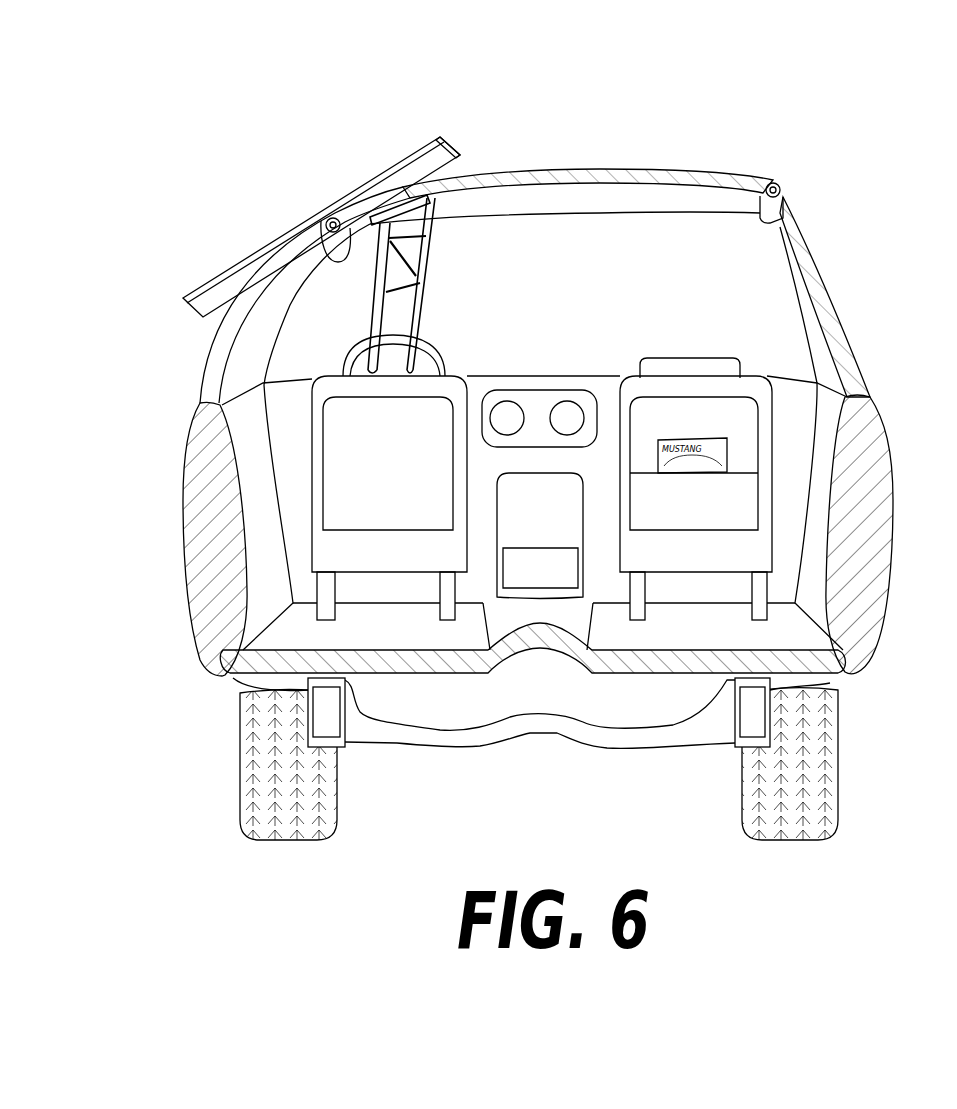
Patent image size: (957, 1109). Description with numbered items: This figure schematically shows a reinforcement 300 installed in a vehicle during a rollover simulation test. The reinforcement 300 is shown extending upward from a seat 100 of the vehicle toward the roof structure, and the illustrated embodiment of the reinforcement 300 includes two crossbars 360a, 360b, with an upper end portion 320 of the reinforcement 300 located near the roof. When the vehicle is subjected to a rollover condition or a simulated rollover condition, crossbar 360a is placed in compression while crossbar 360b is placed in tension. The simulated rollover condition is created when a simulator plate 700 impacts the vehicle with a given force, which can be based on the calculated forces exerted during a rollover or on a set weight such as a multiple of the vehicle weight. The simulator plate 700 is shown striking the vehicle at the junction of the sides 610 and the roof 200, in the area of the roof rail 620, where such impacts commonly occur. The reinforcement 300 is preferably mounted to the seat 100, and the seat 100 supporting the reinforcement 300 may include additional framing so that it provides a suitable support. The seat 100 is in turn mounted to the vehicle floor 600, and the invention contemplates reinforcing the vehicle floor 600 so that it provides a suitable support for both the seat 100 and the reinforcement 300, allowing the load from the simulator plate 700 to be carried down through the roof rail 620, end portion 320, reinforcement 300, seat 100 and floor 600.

The seat 100 is at (455, 385).
The roof 200 is at (611, 170).
The reinforcement 300 is at (411, 284).
The mounting end portion 320 is at (452, 149).
The crossbar 360a is at (428, 247).
The crossbar 360b is at (384, 282).
The vehicle floor 600 is at (458, 673).
The sides 610 is at (207, 373).
The roof rail 620 is at (320, 230).
The simulator plate 700 is at (433, 147).